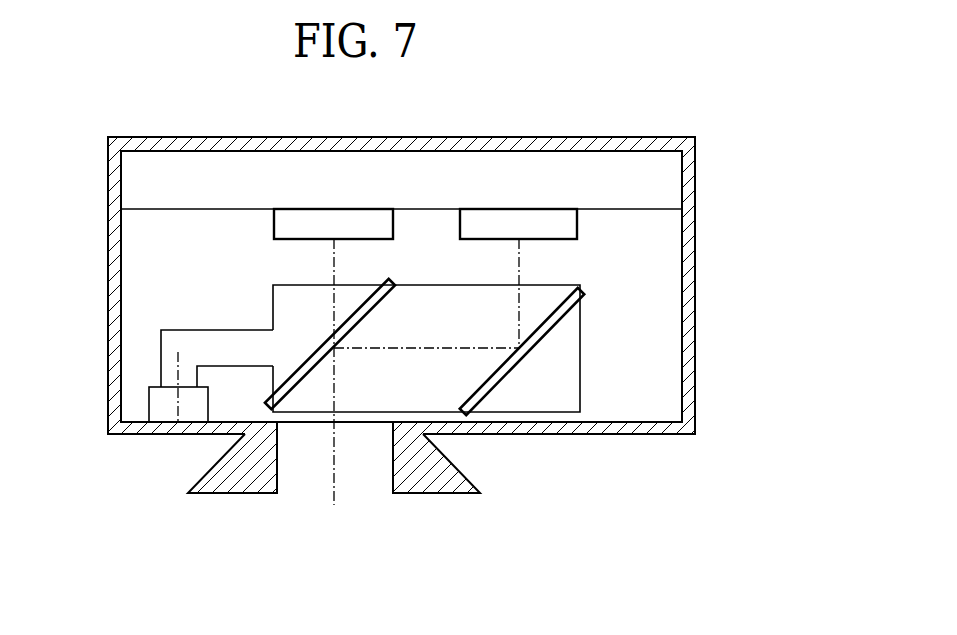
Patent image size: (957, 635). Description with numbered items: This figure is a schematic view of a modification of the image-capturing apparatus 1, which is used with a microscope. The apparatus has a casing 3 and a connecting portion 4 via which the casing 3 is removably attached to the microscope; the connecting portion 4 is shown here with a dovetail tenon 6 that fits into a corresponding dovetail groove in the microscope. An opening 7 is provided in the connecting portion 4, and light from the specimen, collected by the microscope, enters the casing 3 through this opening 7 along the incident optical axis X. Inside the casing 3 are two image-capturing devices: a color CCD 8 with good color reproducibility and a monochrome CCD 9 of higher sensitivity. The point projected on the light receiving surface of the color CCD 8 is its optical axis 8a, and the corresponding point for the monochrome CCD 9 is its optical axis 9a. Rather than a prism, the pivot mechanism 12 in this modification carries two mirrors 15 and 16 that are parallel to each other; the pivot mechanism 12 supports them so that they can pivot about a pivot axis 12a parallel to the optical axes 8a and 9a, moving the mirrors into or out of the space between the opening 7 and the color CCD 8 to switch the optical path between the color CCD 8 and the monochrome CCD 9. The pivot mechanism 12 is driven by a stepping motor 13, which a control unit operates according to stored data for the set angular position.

The image-capturing apparatus 1 is at (415, 321).
The casing 3 is at (696, 250).
The connecting portion 4 is at (386, 483).
The dovetail tenon 6 is at (458, 467).
The opening 7 is at (390, 483).
The color CCD 8 is at (398, 222).
The optical axis of color CCD 8a is at (336, 263).
The monochrome CCD 9 is at (578, 222).
The optical axis of monochrome CCD 9a is at (521, 263).
The pivot mechanism 12 is at (188, 329).
The pivot axis 12a is at (178, 359).
The stepping motor 13 is at (149, 404).
The mirror 15 is at (368, 315).
The mirror 16 is at (540, 316).
The incident optical axis X is at (333, 477).